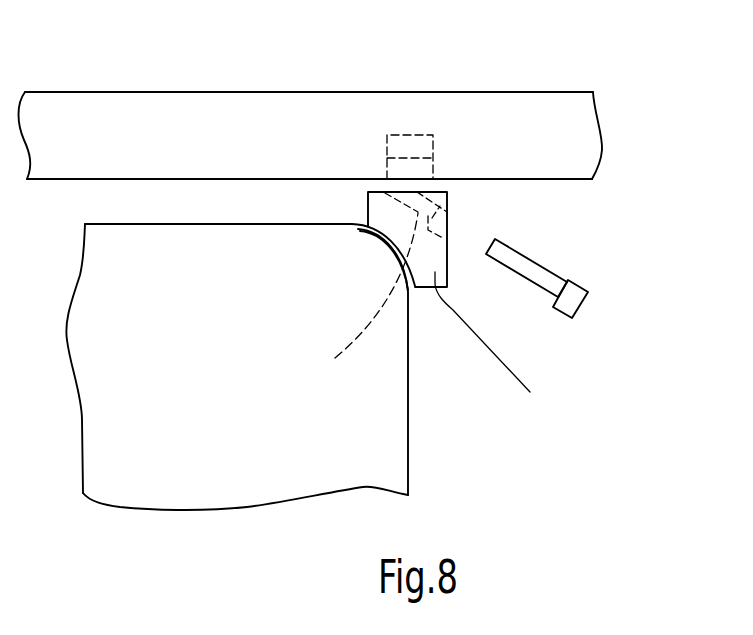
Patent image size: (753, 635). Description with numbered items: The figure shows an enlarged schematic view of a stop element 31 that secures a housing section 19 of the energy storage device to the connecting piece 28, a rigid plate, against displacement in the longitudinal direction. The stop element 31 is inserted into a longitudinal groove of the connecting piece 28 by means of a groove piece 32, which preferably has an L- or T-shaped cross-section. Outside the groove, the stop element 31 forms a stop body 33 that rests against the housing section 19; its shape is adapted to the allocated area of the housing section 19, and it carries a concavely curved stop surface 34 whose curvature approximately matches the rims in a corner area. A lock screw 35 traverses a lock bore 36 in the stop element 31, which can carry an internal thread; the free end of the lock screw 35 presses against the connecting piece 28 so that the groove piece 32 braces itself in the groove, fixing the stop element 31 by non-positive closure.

The housing section 19 is at (383, 418).
The connecting piece 28 is at (527, 108).
The stop element 31 is at (378, 213).
The groove piece 32 is at (408, 133).
The stop body 33 is at (494, 338).
The stop surface 34 is at (388, 252).
The lock screw 35 is at (530, 268).
The lock bore 36 is at (363, 294).